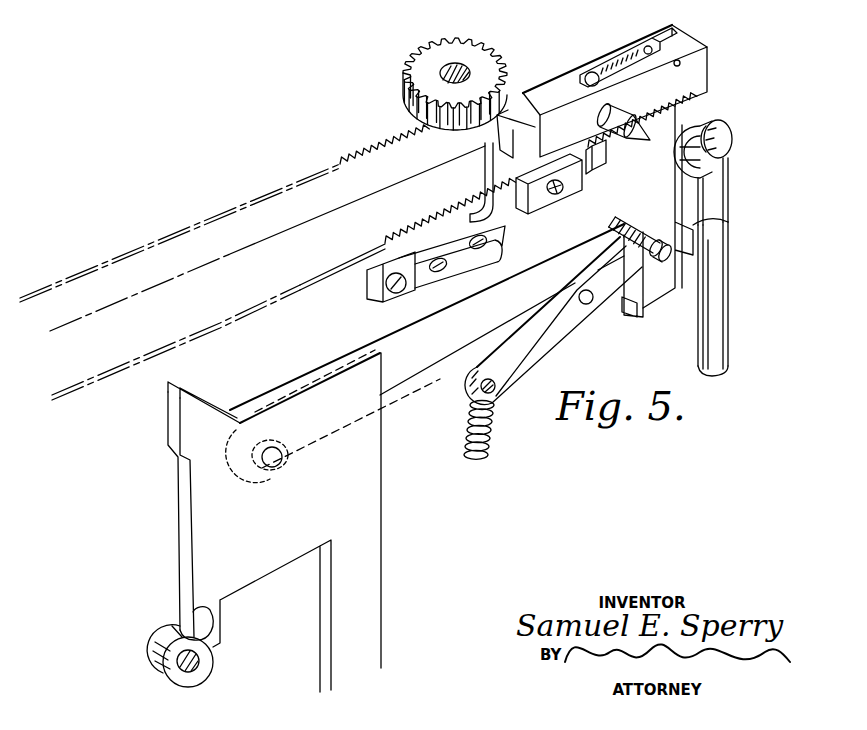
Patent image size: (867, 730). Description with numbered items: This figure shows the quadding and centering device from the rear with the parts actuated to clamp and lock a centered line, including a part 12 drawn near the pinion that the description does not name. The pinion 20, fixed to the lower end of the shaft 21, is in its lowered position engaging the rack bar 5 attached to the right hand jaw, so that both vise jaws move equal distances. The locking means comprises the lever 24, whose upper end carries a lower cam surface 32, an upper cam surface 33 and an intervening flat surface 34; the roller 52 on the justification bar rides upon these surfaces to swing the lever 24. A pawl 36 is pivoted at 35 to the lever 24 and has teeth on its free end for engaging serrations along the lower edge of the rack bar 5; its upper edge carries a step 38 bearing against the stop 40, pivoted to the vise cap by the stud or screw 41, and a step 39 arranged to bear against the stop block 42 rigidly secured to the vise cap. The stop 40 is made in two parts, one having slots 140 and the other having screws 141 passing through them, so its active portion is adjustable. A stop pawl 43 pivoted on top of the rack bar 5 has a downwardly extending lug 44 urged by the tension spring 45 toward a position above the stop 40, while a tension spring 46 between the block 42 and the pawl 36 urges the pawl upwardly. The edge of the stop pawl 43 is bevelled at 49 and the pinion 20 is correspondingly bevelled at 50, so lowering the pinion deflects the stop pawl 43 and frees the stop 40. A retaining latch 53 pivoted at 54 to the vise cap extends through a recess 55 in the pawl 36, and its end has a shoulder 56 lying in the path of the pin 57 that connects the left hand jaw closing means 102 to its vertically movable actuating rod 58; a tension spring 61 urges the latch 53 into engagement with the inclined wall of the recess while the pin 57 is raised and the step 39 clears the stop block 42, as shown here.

The rack bar 5 is at (387, 155).
The pin 12 is at (626, 116).
The pinion 20 is at (437, 87).
The shaft 21 is at (462, 76).
The lever 24 is at (283, 522).
The lower cam surface 32 is at (192, 612).
The upper cam surface 33 is at (177, 464).
The flat surface 34 is at (181, 519).
The pivot 35 is at (270, 468).
The pawl 36 is at (403, 340).
The step 38 is at (549, 212).
The step 39 is at (586, 172).
The stop 40 is at (492, 174).
The stud or screw 41 is at (369, 292).
The stop block 42 is at (543, 203).
The stop pawl 43 is at (485, 122).
The lug 44 is at (615, 85).
The tension spring 45 is at (602, 62).
The tension spring 46 is at (632, 225).
The bevelled edge 49 is at (507, 95).
The bevelled lower edge 50 is at (406, 120).
The roller 52 is at (152, 648).
The retaining latch 53 is at (527, 355).
The pivot 54 is at (587, 305).
The recess 55 is at (630, 297).
The shoulder 56 is at (728, 232).
The pin 57 is at (682, 130).
The actuating rod 58 is at (722, 282).
The tension spring 61 is at (492, 438).
The jaw closing means 102 is at (733, 127).
The slots 140 is at (444, 274).
The screws 141 is at (485, 241).